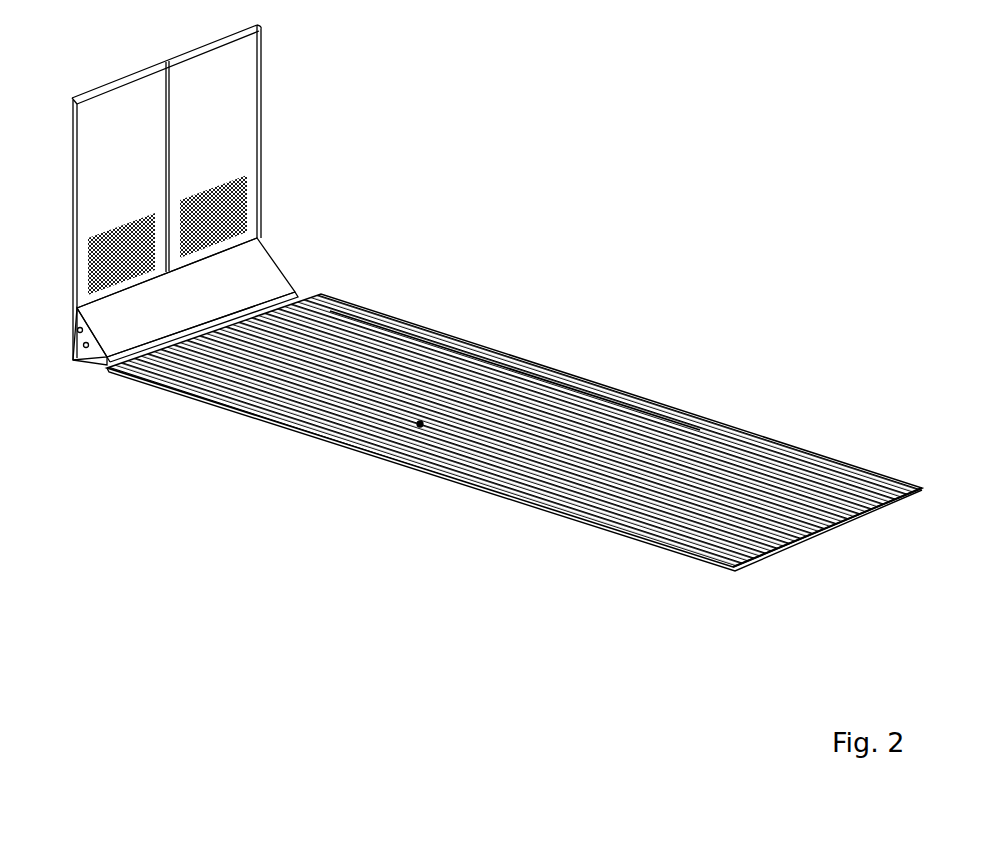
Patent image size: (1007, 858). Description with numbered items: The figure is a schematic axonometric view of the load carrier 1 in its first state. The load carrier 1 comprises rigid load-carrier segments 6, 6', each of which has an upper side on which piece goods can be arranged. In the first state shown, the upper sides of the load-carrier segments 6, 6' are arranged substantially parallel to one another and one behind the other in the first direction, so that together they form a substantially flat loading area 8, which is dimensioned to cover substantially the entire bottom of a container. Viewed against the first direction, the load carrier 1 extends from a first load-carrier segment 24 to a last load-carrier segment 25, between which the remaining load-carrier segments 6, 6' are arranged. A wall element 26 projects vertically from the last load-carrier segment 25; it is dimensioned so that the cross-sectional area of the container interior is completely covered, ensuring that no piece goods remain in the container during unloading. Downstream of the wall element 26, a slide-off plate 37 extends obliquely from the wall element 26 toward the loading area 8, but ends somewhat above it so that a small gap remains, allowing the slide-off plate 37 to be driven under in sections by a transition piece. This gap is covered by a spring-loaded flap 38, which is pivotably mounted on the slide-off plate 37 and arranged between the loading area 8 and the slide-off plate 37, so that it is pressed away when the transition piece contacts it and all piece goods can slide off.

The load carrier 1 is at (508, 220).
The load-carrier segment 6 is at (514, 432).
The load-carrier segment 6' is at (515, 357).
The loading area 8 is at (420, 424).
The first load-carrier segment 24 is at (908, 488).
The last load-carrier segment 25 is at (102, 368).
The wall element 26 is at (243, 142).
The slide-off plate 37 is at (264, 270).
The spring-loaded flap 38 is at (278, 298).